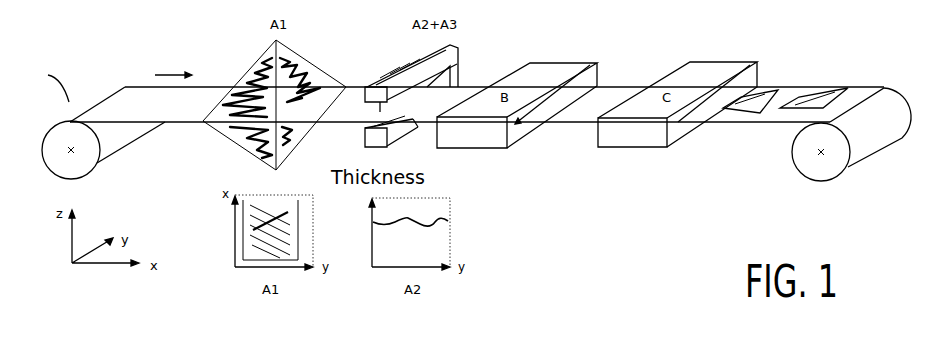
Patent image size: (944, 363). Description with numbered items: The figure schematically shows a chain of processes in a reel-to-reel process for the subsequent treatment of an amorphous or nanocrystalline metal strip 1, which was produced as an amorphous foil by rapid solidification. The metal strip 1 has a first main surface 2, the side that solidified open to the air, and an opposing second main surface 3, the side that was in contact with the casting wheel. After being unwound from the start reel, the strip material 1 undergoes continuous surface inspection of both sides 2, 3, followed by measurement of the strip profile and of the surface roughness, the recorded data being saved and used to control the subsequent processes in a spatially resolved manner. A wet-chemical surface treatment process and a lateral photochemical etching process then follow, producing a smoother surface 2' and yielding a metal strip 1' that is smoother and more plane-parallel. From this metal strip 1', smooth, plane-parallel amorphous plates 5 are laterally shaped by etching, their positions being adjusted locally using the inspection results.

The metal strip 1 is at (51, 86).
The metal strip 1' is at (851, 95).
The first main surface 2 is at (153, 66).
The smoother surface 2' is at (750, 74).
The second main surface 3 is at (165, 124).
The amorphous plates 5 is at (816, 96).